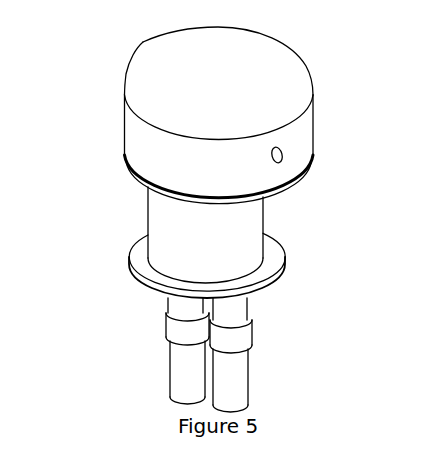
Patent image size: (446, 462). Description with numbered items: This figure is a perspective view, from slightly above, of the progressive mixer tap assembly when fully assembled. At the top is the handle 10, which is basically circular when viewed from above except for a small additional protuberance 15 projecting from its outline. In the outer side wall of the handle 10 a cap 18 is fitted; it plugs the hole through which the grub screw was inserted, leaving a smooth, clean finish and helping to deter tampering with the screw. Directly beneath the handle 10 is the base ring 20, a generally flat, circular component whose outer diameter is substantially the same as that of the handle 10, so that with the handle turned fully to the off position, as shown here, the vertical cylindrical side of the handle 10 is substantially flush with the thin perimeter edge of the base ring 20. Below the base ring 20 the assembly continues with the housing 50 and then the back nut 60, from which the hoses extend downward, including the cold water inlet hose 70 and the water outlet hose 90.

The handle 10 is at (160, 145).
The protuberance 15 is at (141, 40).
The cap 18 is at (280, 157).
The base ring 20 is at (272, 198).
The housing 50 is at (163, 225).
The back nut 60 is at (142, 260).
The cold water inlet hose 70 is at (183, 368).
The water outlet hose 90 is at (228, 382).